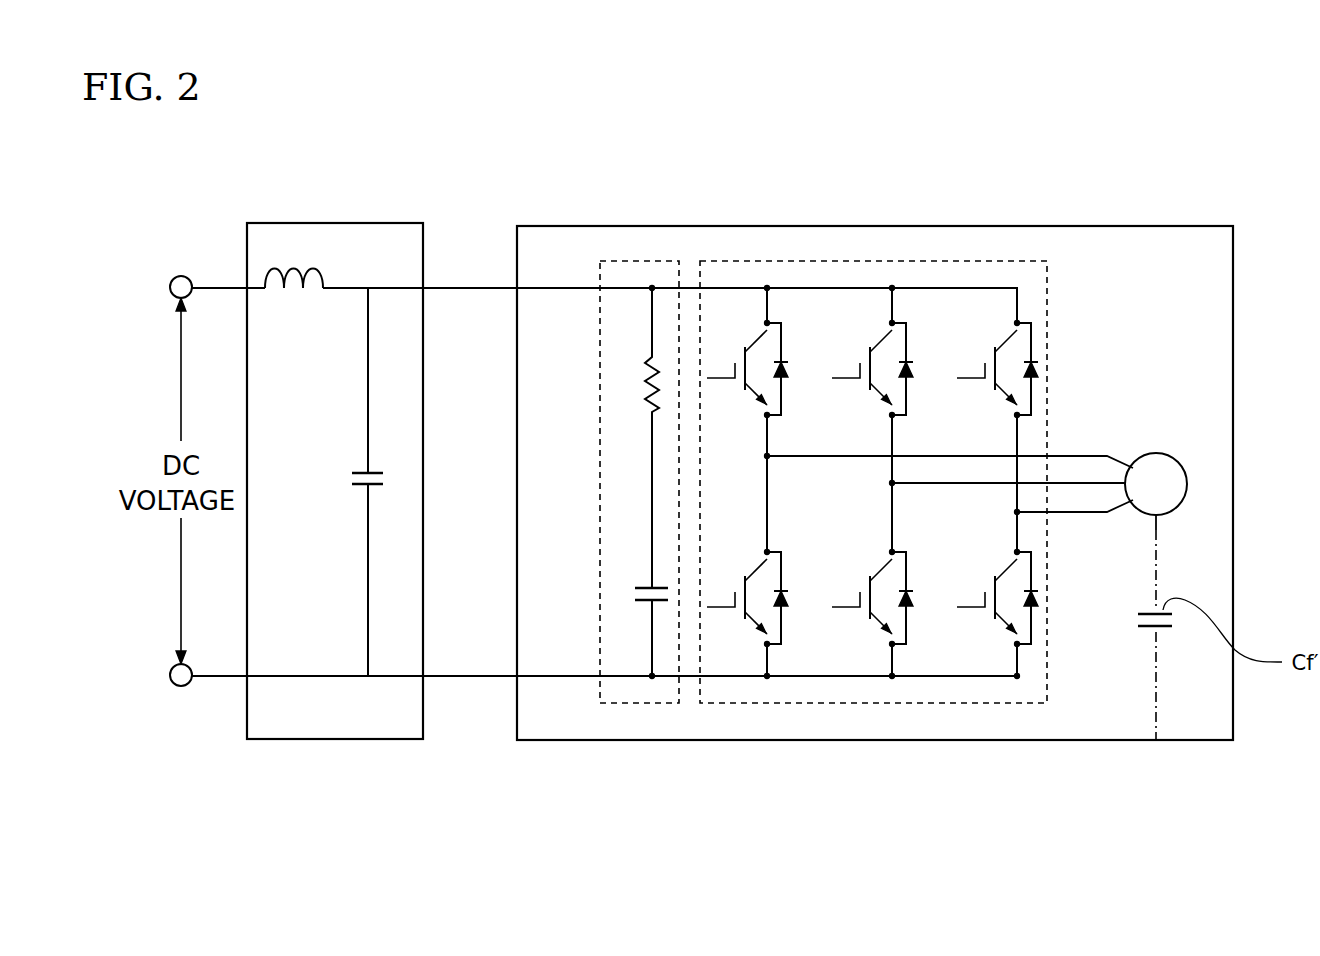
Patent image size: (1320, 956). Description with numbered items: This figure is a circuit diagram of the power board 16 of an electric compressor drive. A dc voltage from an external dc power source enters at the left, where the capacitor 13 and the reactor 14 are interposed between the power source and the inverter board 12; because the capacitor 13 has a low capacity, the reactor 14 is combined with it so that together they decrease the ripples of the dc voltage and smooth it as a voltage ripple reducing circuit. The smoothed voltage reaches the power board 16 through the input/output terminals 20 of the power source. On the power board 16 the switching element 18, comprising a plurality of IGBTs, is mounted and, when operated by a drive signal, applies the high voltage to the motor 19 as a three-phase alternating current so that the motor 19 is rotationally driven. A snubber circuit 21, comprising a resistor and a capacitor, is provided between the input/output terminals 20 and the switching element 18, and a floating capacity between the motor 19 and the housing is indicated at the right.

The inverter board 12 is at (875, 440).
The capacitor 13 is at (368, 486).
The reactor 14 is at (303, 305).
The power board 16 is at (1143, 227).
The switching element 18 is at (865, 260).
The motor 19 is at (1187, 484).
The input/output terminals 20 is at (542, 290).
The snubber circuit 21 is at (640, 260).